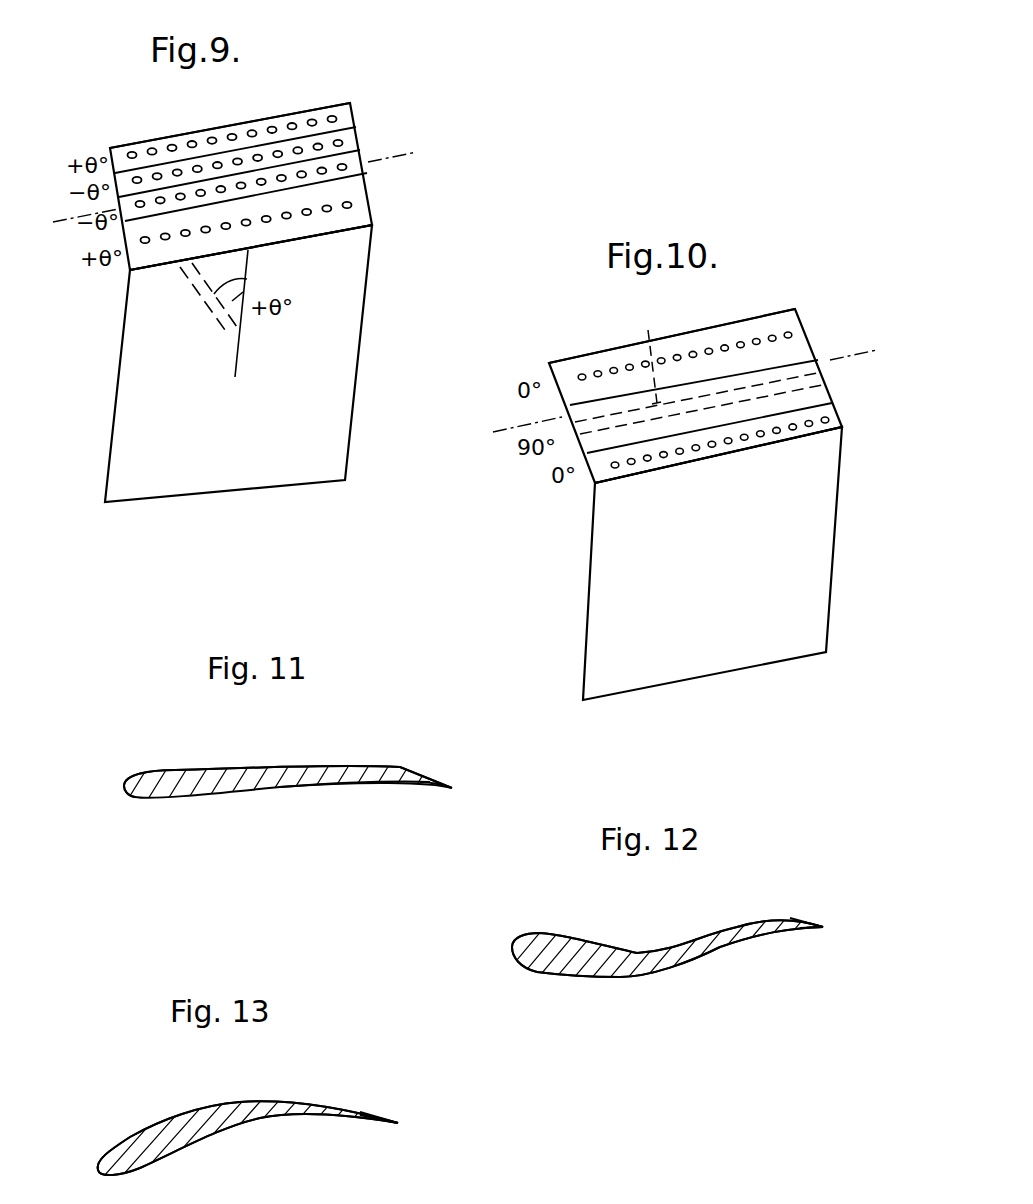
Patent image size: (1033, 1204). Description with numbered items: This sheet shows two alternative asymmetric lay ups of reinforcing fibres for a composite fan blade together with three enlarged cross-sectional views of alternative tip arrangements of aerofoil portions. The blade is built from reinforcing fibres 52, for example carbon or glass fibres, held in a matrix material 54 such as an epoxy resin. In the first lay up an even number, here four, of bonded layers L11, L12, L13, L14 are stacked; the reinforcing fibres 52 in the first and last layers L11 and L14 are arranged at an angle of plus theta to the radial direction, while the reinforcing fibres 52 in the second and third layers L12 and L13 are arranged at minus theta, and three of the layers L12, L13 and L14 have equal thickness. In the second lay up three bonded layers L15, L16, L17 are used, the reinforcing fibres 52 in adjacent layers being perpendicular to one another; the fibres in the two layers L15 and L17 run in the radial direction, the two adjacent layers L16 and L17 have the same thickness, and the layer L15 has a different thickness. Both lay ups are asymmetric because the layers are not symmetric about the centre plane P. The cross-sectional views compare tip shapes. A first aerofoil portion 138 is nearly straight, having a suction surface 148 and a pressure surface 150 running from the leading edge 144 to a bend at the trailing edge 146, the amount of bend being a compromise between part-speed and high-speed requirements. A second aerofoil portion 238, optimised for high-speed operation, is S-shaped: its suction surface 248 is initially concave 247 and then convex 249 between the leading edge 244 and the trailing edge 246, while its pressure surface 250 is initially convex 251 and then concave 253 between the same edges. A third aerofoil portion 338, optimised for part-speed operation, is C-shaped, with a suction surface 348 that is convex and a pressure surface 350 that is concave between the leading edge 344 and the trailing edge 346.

In FIG. 9, the reinforcing fibres 52 is at (257, 154).
In FIG. 10, the reinforcing fibres 52 is at (693, 353).
In FIG. 9, the matrix material 54 is at (300, 147).
In FIG. 10, the matrix material 54 is at (569, 366).
In FIG. 9, the first layer L11 is at (371, 200).
In FIG. 9, the second layer L12 is at (360, 150).
In FIG. 9, the third layer L13 is at (356, 127).
In FIG. 9, the fourth layer L14 is at (350, 103).
In FIG. 10, the first layer L15 is at (837, 408).
In FIG. 10, the second layer L16 is at (822, 382).
In FIG. 10, the third layer L17 is at (803, 325).
In FIG. 9, the centre plane P is at (417, 152).
In FIG. 10, the centre plane P is at (503, 430).
In FIG. 11, the aerofoil portion 138 is at (279, 790).
In FIG. 11, the leading edge 144 is at (122, 787).
In FIG. 11, the trailing edge 146 is at (440, 783).
In FIG. 11, the suction surface 148 is at (278, 767).
In FIG. 11, the pressure surface 150 is at (308, 785).
In FIG. 12, the aerofoil portion 238 is at (663, 970).
In FIG. 12, the leading edge 244 is at (517, 938).
In FIG. 12, the trailing edge 246 is at (823, 926).
In FIG. 12, the concave portion of suction surface 247 is at (565, 937).
In FIG. 12, the suction surface 248 is at (670, 943).
In FIG. 12, the convex portion of suction surface 249 is at (750, 920).
In FIG. 12, the pressure surface 250 is at (703, 957).
In FIG. 12, the convex portion of pressure surface 251 is at (560, 977).
In FIG. 12, the concave portion of pressure surface 253 is at (747, 942).
In FIG. 13, the aerofoil portion 338 is at (213, 1142).
In FIG. 13, the leading edge 344 is at (98, 1160).
In FIG. 13, the trailing edge 346 is at (400, 1123).
In FIG. 13, the suction surface 348 is at (220, 1105).
In FIG. 13, the pressure surface 350 is at (270, 1122).